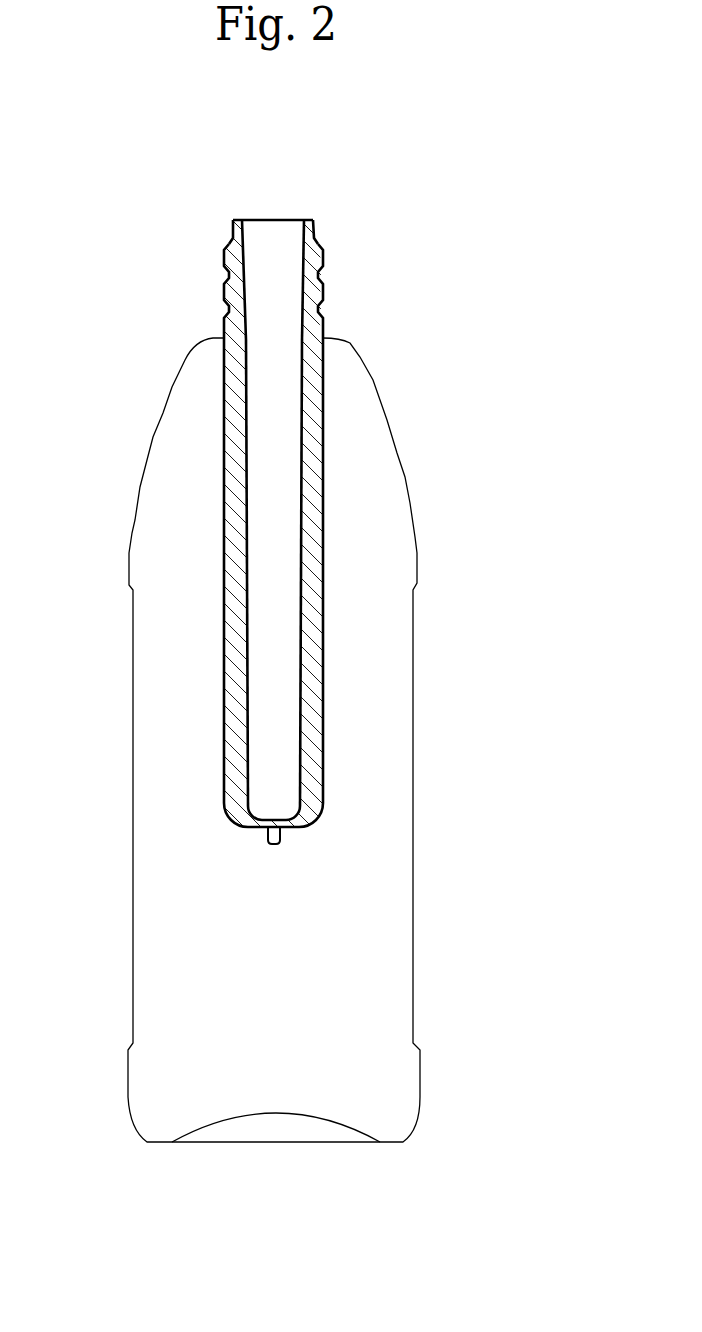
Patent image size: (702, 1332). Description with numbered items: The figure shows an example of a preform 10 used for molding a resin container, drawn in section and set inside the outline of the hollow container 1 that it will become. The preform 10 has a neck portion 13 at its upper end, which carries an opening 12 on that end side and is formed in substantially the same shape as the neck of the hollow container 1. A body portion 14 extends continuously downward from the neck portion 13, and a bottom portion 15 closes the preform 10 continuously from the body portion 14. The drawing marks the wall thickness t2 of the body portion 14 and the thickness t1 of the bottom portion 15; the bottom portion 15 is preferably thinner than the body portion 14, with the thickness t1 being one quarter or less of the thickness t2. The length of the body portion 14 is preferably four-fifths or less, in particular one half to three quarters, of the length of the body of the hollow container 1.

The hollow container 1 is at (377, 428).
The preform 10 is at (373, 580).
The opening 12 is at (281, 243).
The neck portion 13 is at (323, 265).
The body portion 14 is at (310, 673).
The bottom portion 15 is at (240, 823).
The thickness of the bottom portion t1 is at (300, 821).
The thickness of the body portion t2 is at (292, 630).